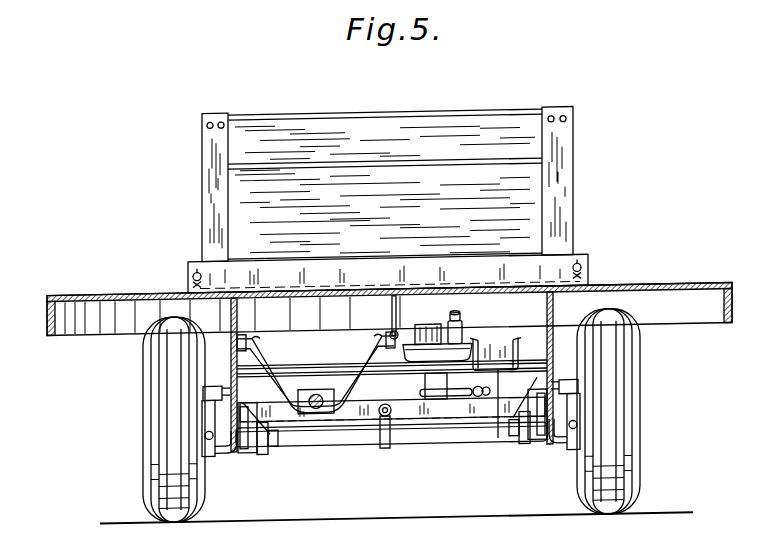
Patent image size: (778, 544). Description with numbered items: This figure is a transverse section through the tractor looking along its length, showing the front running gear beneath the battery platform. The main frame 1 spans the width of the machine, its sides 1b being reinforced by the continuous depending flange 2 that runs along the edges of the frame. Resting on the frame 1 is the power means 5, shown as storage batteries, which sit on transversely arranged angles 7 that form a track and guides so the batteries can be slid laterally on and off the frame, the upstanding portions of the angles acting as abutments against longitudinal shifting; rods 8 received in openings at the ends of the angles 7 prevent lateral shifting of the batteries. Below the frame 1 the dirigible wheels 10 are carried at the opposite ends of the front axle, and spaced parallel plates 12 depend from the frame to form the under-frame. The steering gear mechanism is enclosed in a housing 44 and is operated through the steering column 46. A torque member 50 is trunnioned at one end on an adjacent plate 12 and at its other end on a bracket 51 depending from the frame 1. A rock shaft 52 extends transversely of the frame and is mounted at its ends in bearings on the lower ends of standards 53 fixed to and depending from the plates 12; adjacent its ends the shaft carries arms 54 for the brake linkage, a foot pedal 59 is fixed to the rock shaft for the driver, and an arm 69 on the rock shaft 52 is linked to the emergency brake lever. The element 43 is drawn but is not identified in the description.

The main frame 1 is at (658, 289).
The sides 1b is at (732, 296).
The depending flange 2 is at (47, 315).
The power means 5 is at (538, 216).
The angles 7 is at (282, 270).
The rods 8 is at (192, 272).
The dirigible wheels 10 is at (636, 416).
The plates 12 is at (238, 325).
The rod 43 is at (455, 400).
The housing 44 is at (428, 326).
The steering column 46 is at (460, 320).
The torque member 50 is at (262, 360).
The bracket 51 is at (392, 315).
The rock shaft 52 is at (343, 446).
The standards 53 is at (250, 452).
The arms 54 is at (265, 452).
The foot pedal 59 is at (500, 340).
The arm 69 is at (390, 444).